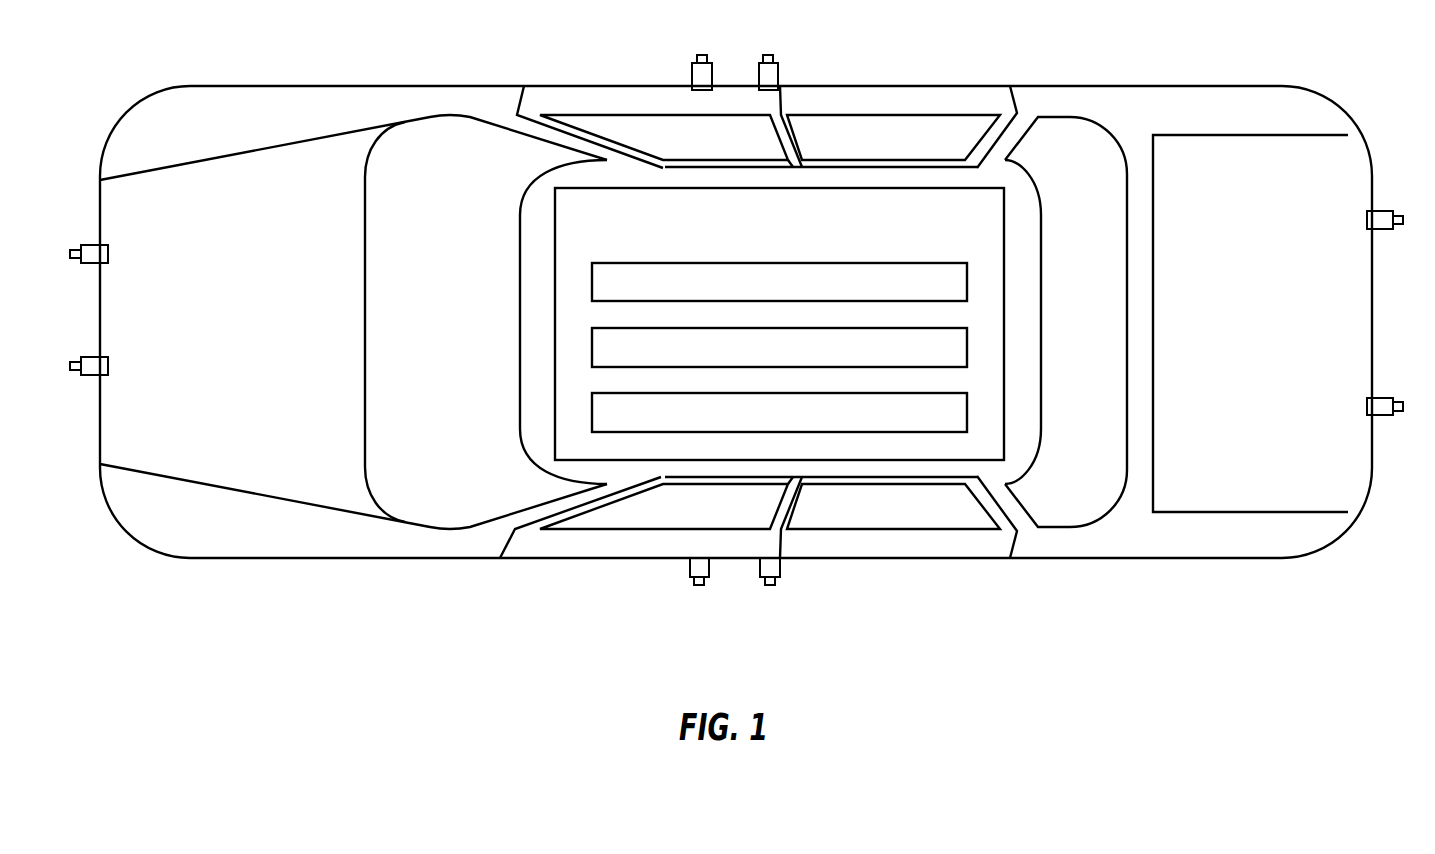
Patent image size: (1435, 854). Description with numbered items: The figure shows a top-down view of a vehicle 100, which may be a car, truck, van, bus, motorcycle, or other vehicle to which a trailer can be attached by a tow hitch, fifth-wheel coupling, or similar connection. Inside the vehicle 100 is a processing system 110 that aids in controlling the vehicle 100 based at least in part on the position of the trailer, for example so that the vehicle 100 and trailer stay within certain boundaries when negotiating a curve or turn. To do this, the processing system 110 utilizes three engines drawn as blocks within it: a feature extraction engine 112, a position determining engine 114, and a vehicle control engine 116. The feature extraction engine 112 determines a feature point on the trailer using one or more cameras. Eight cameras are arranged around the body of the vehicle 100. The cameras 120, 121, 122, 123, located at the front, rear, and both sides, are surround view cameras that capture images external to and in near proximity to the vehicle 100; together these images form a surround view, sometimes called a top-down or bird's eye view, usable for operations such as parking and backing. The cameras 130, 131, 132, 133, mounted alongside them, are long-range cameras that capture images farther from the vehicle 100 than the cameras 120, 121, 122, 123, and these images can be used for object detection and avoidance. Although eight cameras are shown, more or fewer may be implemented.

The vehicle 100 is at (250, 86).
The processing system 110 is at (797, 250).
The feature extraction engine 112 is at (912, 293).
The position determining engine 114 is at (922, 358).
The vehicle control engine 116 is at (898, 423).
The camera 120 is at (92, 245).
The camera 121 is at (699, 585).
The camera 122 is at (700, 55).
The camera 123 is at (1375, 229).
The camera 130 is at (92, 357).
The camera 131 is at (770, 585).
The camera 132 is at (768, 55).
The camera 133 is at (1377, 415).